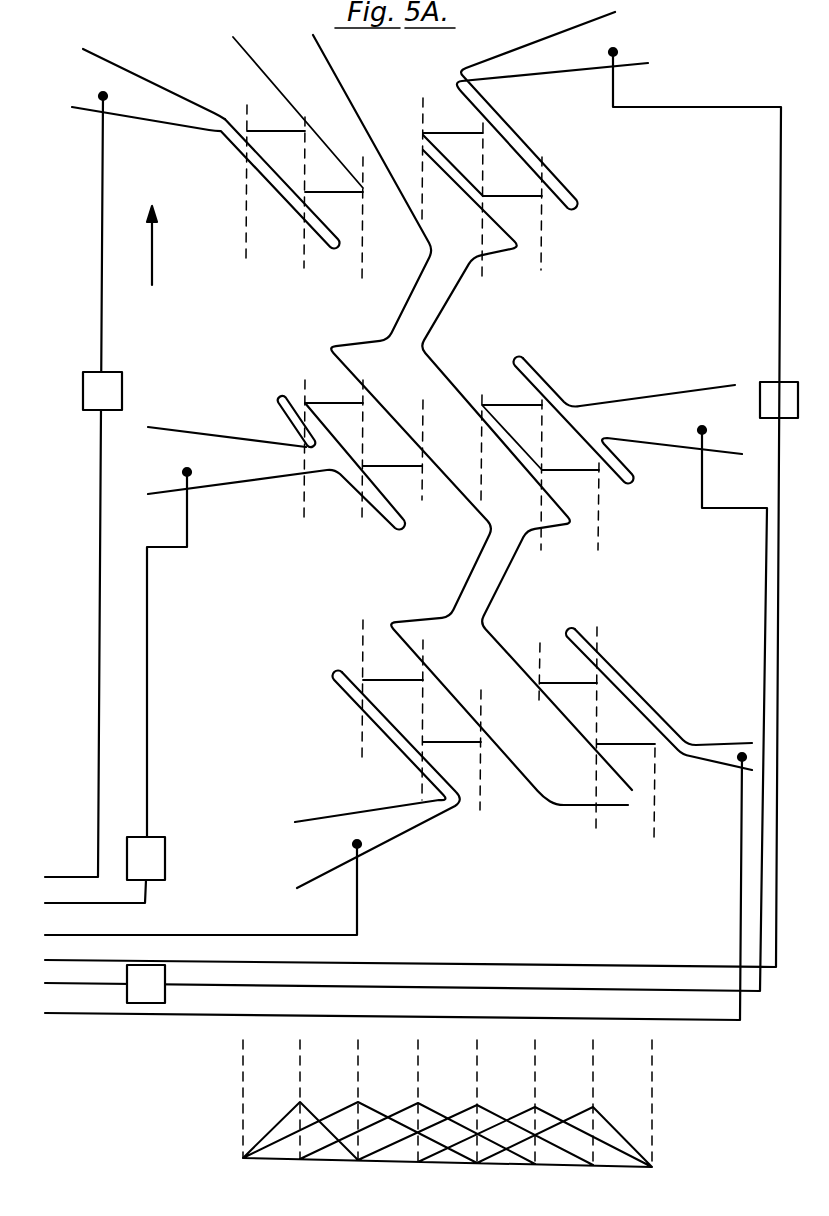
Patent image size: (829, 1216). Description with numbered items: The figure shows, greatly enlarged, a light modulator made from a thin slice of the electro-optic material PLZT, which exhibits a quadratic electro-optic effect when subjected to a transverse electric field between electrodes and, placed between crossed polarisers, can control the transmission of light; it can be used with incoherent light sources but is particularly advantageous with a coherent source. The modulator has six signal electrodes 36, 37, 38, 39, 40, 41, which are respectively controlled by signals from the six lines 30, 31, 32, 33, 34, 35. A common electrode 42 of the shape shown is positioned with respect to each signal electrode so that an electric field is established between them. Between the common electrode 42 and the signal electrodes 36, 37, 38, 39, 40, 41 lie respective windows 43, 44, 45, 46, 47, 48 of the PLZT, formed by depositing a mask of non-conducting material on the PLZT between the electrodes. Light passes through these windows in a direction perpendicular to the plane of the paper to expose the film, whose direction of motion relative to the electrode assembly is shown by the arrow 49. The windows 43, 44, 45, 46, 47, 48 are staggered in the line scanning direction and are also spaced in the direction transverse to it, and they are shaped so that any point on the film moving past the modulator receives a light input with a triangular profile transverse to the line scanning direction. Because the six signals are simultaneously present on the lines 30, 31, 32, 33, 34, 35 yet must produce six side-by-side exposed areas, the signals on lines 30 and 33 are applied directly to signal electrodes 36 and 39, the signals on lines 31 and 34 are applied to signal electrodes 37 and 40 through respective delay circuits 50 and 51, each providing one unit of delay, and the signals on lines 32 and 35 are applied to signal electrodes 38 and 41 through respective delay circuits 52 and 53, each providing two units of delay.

The signal line 30 is at (105, 1017).
The signal line 31 is at (92, 985).
The signal line 32 is at (100, 958).
The signal line 33 is at (165, 934).
The signal line 34 is at (80, 903).
The signal line 35 is at (62, 876).
The signal electrode 36 is at (632, 695).
The signal electrode 37 is at (553, 392).
The signal electrode 38 is at (512, 137).
The signal electrode 39 is at (342, 827).
The signal electrode 40 is at (240, 453).
The signal electrode 41 is at (165, 102).
The common electrode 42 is at (365, 103).
The window 43 is at (565, 695).
The window 44 is at (517, 410).
The window 45 is at (452, 143).
The window 46 is at (392, 688).
The window 47 is at (340, 412).
The window 48 is at (268, 133).
The arrow 49 is at (151, 258).
The delay circuit 50 is at (158, 837).
The delay circuit 51 is at (165, 1000).
The delay circuit 52 is at (123, 387).
The delay circuit 53 is at (767, 380).